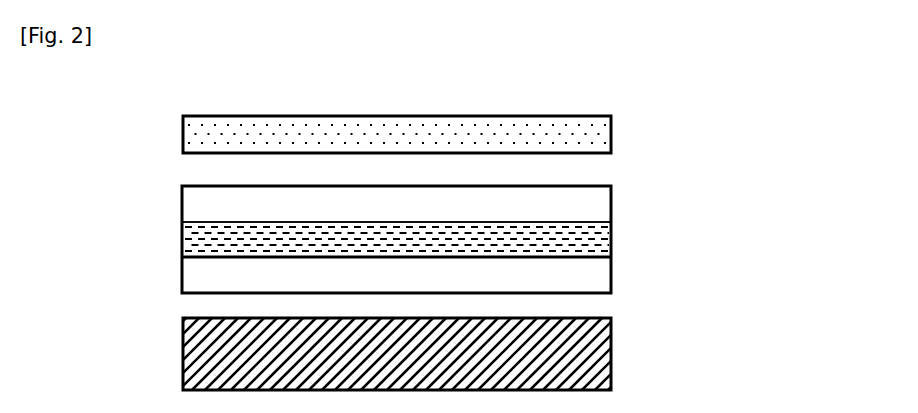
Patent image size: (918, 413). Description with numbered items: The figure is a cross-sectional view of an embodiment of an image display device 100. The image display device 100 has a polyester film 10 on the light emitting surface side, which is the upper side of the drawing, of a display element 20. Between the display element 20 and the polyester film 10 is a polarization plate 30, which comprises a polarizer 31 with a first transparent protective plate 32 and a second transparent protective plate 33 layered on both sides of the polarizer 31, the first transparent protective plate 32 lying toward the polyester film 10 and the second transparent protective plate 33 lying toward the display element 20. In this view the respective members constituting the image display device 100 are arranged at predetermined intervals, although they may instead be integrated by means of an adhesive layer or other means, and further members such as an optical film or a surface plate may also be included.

The image display device 100 is at (488, 253).
The polyester film 10 is at (580, 134).
The display element 20 is at (438, 354).
The polarization plate 30 is at (475, 239).
The polarizer 31 is at (608, 237).
The first transparent protective plate 32 is at (596, 203).
The second transparent protective plate 33 is at (596, 273).